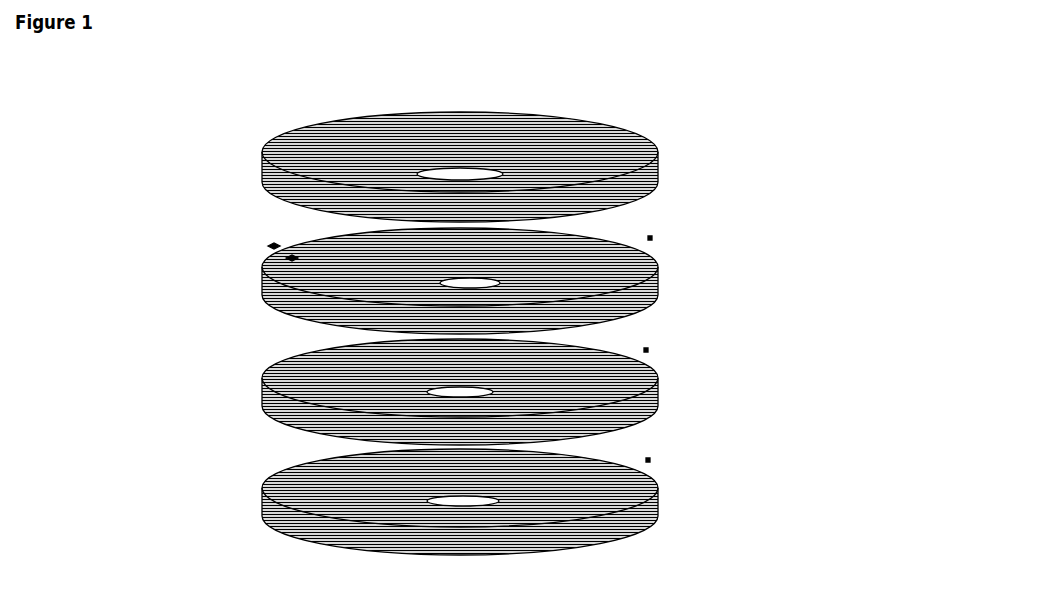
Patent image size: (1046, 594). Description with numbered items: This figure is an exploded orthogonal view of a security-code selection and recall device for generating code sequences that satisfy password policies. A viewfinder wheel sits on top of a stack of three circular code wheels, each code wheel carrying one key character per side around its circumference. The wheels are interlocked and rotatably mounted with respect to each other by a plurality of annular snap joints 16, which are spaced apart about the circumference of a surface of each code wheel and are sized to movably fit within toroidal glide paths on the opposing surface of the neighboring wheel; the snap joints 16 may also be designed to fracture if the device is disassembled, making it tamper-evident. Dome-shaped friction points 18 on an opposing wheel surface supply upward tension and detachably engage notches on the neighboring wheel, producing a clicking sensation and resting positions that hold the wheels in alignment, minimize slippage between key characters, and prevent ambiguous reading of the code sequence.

The snap joints 16 is at (262, 241).
The friction points 18 is at (650, 460).